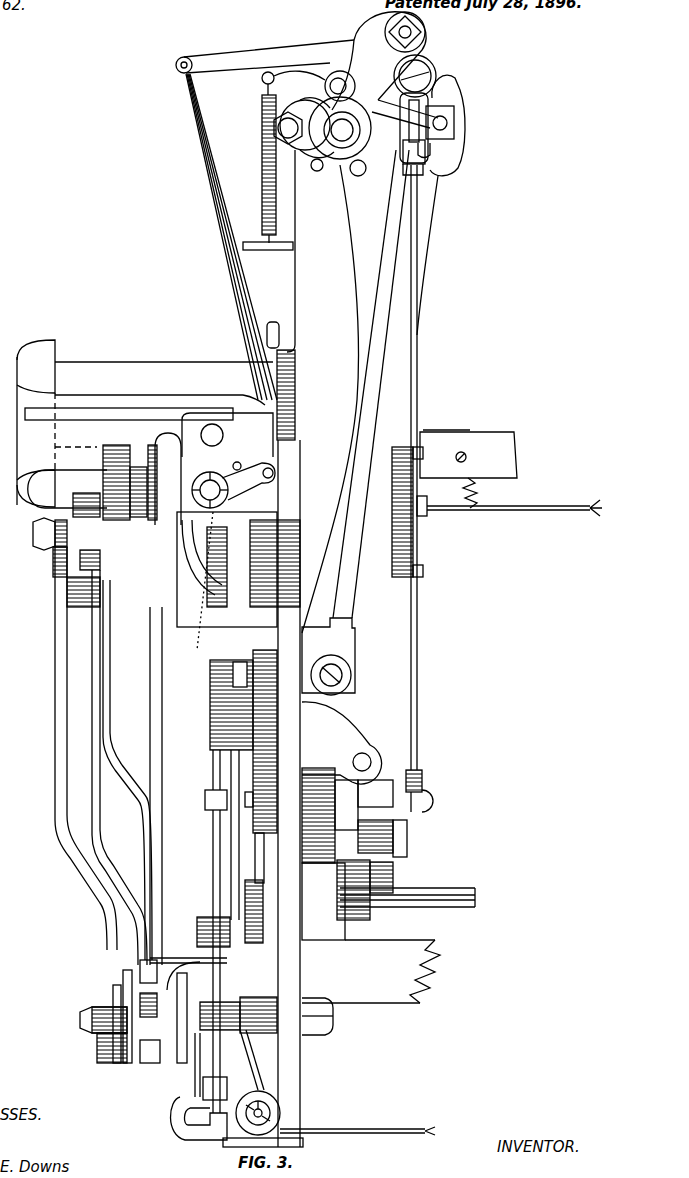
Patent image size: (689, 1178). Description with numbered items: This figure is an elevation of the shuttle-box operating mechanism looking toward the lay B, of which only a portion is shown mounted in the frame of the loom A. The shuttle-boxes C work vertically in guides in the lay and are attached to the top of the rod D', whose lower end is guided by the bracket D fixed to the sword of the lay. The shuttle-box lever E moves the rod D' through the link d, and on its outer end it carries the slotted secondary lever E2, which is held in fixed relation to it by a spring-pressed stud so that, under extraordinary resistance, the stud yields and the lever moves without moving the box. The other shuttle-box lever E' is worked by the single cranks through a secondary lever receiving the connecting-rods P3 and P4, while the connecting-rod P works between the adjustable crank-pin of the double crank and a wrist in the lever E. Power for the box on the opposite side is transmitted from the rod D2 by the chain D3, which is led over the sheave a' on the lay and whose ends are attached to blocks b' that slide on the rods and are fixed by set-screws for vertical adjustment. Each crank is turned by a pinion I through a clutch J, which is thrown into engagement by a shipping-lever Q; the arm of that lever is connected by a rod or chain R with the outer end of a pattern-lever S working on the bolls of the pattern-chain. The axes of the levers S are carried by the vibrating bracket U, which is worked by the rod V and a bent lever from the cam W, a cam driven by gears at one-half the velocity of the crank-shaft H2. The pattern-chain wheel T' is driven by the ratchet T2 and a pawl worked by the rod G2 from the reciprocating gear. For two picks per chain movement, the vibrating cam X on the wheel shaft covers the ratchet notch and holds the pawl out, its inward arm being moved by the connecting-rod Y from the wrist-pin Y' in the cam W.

The pattern-lever S is at (265, 60).
The vibrating bracket U is at (389, 85).
The vibrating cam X is at (369, 123).
The pattern-chain wheel T' is at (286, 161).
The ratchet T2 is at (338, 159).
The rod V is at (429, 255).
The connecting-rod Y is at (421, 467).
The wrist-pin Y' is at (427, 791).
The rod or chain R is at (232, 237).
The rod G2 is at (355, 467).
The frame of the loom A is at (331, 648).
The shuttle-boxes C is at (145, 424).
The shipping-lever Q is at (228, 504).
The pinion I is at (238, 569).
The clutch J is at (198, 587).
The rod D' is at (164, 786).
The connecting-rod P is at (76, 748).
The connecting-rod P3 is at (111, 767).
The connecting-rod P4 is at (127, 770).
The rod D2 is at (237, 881).
The block b' is at (216, 800).
The cam W is at (354, 844).
The crank-shaft H2 is at (407, 888).
The lay B is at (454, 503).
The chain D3 is at (401, 806).
The shuttle-box lever E is at (153, 1004).
The secondary lever E2 is at (116, 1014).
The shuttle-box lever E' is at (183, 1020).
The link d is at (198, 1086).
The bracket D is at (252, 1060).
The sheave a' is at (258, 1114).